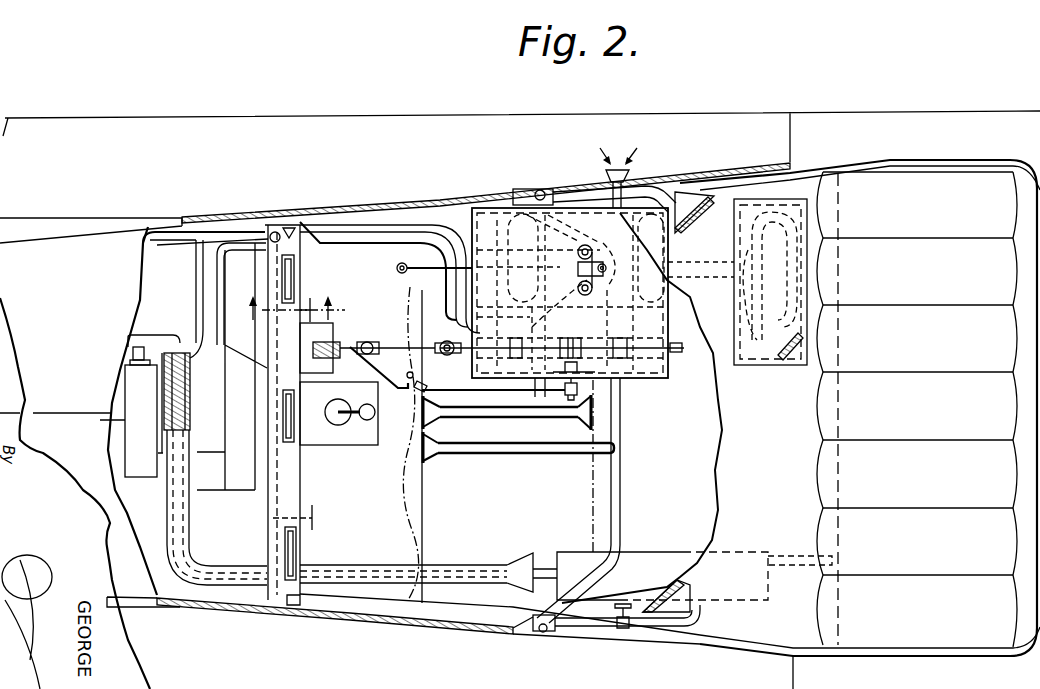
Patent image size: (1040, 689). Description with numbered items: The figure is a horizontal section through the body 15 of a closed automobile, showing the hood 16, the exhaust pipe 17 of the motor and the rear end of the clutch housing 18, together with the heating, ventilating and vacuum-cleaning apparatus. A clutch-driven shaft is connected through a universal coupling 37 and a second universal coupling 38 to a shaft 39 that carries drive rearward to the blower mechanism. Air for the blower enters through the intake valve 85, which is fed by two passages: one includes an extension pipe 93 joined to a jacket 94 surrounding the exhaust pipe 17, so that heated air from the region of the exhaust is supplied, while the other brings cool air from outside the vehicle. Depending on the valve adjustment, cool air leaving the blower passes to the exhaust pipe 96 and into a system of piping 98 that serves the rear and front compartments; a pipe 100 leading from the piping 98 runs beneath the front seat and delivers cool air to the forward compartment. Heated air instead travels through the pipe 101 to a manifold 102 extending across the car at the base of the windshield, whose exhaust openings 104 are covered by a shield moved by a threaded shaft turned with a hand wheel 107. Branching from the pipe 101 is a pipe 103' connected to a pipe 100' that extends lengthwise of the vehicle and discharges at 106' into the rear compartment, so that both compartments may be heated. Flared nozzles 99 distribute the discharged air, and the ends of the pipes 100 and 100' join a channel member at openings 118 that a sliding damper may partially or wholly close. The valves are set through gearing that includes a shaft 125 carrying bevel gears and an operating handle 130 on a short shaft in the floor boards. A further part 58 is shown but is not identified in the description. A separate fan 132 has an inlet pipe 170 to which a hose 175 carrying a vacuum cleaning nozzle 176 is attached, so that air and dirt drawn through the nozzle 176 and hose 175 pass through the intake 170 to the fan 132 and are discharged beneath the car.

The body 15 is at (358, 200).
The hood 16 is at (100, 243).
The exhaust pipe 17 is at (542, 565).
The rear end of the clutch housing 18 is at (266, 464).
The universal coupling 37 is at (365, 343).
The universal coupling 38 is at (440, 343).
The shaft 39 is at (648, 352).
The lever valve 58 is at (410, 377).
The intake valve 85 is at (545, 313).
The extension pipe 93 is at (383, 233).
The jacket 94 is at (332, 567).
The exhaust pipe 96 is at (604, 178).
The system of piping 98 is at (620, 438).
The nozzles 99 is at (687, 203).
The pipe 100 is at (526, 462).
The pipe 100' is at (509, 424).
The pipe 101 is at (322, 256).
The manifold 102 is at (570, 348).
The pipe 103' is at (559, 410).
The exhaust openings 104 is at (303, 240).
The discharge point 106' is at (630, 413).
The hand wheel 107 is at (421, 420).
The openings 118 is at (595, 403).
The shaft 125 is at (570, 293).
The operating handle 130 is at (403, 260).
The fan 132 is at (670, 257).
The inlet pipe 170 is at (706, 288).
The hose 175 is at (752, 365).
The vacuum cleaning nozzle 176 is at (793, 367).